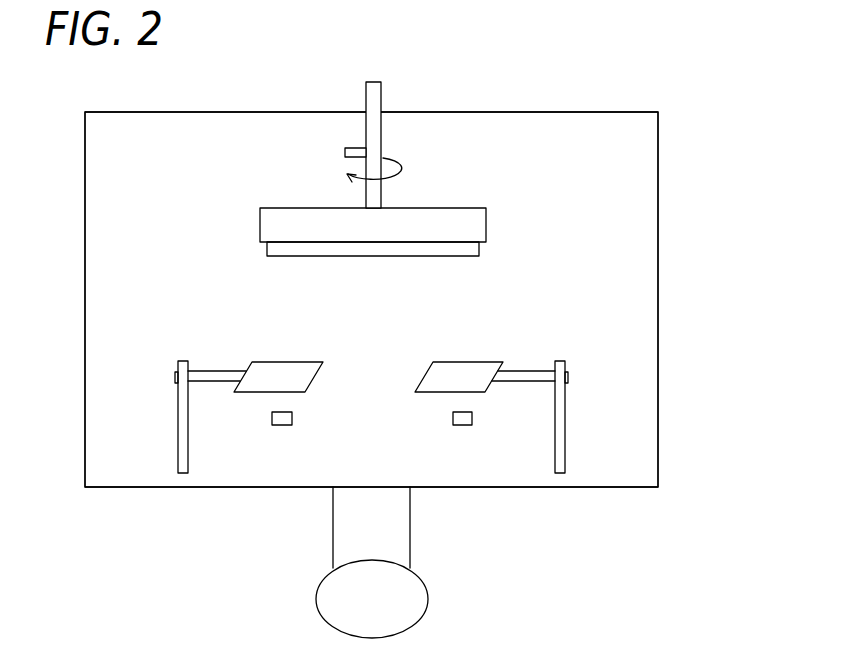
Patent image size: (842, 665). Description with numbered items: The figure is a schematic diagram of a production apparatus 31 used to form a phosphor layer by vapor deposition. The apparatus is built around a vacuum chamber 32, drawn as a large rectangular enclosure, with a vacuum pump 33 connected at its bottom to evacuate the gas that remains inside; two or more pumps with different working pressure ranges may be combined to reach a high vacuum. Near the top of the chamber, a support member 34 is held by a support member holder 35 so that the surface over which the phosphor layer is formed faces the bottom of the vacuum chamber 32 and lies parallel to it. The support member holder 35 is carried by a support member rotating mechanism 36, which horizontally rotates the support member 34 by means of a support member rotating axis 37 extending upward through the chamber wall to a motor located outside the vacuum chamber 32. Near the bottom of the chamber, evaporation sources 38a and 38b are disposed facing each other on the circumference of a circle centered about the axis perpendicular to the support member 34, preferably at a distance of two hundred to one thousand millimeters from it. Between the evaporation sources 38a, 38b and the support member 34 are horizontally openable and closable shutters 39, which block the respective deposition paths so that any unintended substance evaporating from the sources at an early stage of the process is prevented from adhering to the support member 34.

The production apparatus 31 is at (424, 96).
The vacuum chamber 32 is at (658, 138).
The vacuum pump 33 is at (428, 598).
The support member 34 is at (479, 249).
The support member holder 35 is at (470, 208).
The support member rotating mechanism 36 is at (398, 187).
The support member rotating axis 37 is at (365, 130).
The evaporation source 38a is at (282, 425).
The evaporation source 38b is at (462, 425).
The shutters 39 is at (482, 362).